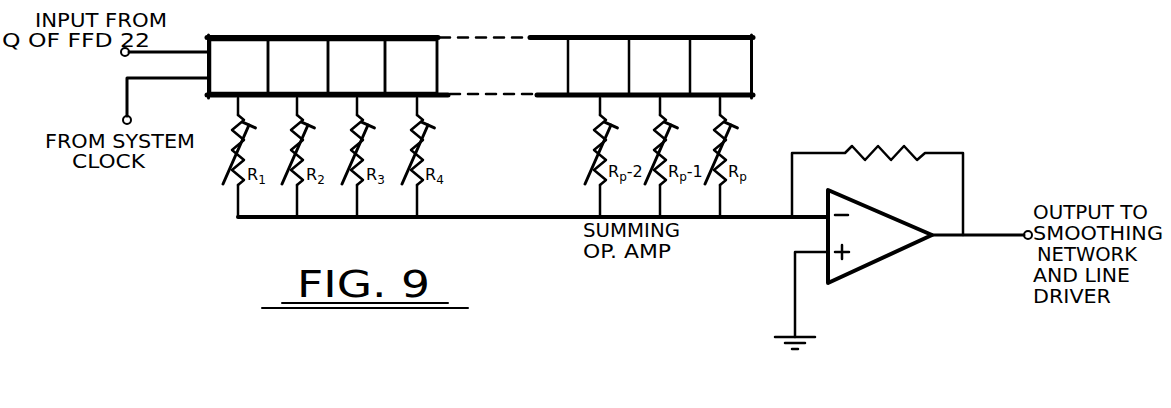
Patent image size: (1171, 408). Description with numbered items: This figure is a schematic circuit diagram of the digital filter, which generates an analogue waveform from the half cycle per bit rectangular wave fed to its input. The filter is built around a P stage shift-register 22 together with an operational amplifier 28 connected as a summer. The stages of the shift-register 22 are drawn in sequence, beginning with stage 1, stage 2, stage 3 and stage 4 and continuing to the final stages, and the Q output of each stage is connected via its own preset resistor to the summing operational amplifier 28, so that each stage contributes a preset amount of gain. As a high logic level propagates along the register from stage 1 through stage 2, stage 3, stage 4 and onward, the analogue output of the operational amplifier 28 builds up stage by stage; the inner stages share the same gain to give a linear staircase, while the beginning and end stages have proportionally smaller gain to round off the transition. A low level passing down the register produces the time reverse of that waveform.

The shift-register 22 is at (480, 53).
The operational amplifier 28 is at (892, 239).
The shift register stage 1 (D flip-flop) 1 is at (239, 66).
The shift register stage 2 is at (298, 66).
The shift register stage 3 is at (356, 66).
The shift register stage 4 is at (411, 66).